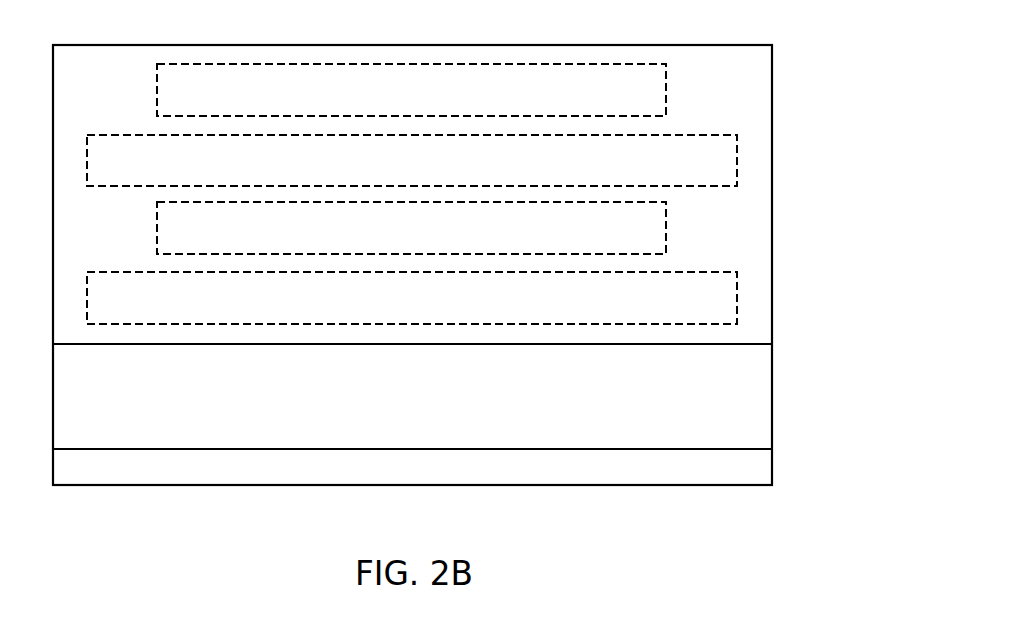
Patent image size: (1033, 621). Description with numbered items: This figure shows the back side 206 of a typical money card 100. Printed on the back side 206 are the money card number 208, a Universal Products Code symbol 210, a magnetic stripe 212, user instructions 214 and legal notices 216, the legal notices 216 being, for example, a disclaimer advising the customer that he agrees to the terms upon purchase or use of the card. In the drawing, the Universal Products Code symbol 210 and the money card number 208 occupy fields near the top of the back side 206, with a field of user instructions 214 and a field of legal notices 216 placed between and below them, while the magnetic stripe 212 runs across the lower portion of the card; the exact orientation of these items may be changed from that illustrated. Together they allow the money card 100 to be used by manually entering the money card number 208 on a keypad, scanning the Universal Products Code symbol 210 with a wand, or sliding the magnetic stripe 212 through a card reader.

The money card 100 is at (798, 78).
The back side 206 is at (760, 242).
The money card number 208 is at (652, 233).
The Universal Products Code (UPC) symbol 210 is at (627, 67).
The magnetic stripe 212 is at (763, 385).
The user instructions 214 is at (725, 162).
The legal notices 216 is at (735, 298).